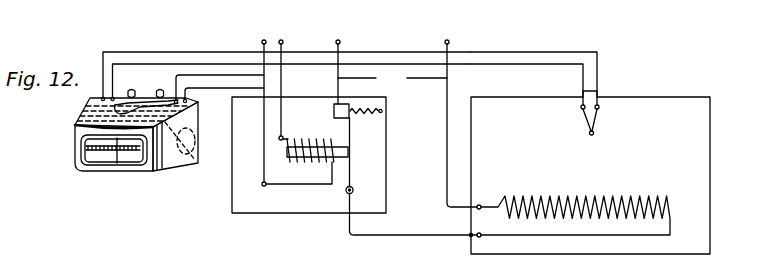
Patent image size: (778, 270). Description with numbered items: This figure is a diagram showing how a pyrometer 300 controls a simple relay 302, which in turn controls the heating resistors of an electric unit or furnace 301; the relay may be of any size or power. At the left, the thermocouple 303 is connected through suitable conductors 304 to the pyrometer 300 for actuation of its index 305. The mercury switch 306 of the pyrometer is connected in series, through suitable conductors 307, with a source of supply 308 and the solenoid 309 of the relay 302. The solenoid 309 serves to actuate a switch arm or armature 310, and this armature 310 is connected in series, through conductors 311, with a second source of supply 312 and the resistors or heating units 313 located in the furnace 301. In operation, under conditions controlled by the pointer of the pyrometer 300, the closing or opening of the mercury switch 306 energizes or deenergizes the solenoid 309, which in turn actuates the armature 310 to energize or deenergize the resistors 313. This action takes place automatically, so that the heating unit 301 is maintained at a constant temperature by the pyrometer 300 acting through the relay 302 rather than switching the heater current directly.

The pyrometer 300 is at (155, 169).
The electric unit or furnace 301 is at (662, 98).
The simple relay 302 is at (312, 207).
The thermocouple 303 is at (595, 123).
The conductors 304 is at (497, 62).
The index 305 is at (110, 148).
The mercury switch 306 is at (173, 157).
The conductors 307 is at (222, 76).
The source of supply 308 is at (282, 41).
The solenoid 309 is at (307, 158).
The switch arm or armature 310 is at (352, 155).
The conductors 311 is at (392, 79).
The source of supply 312 is at (446, 40).
The resistors or heating units 313 is at (603, 197).